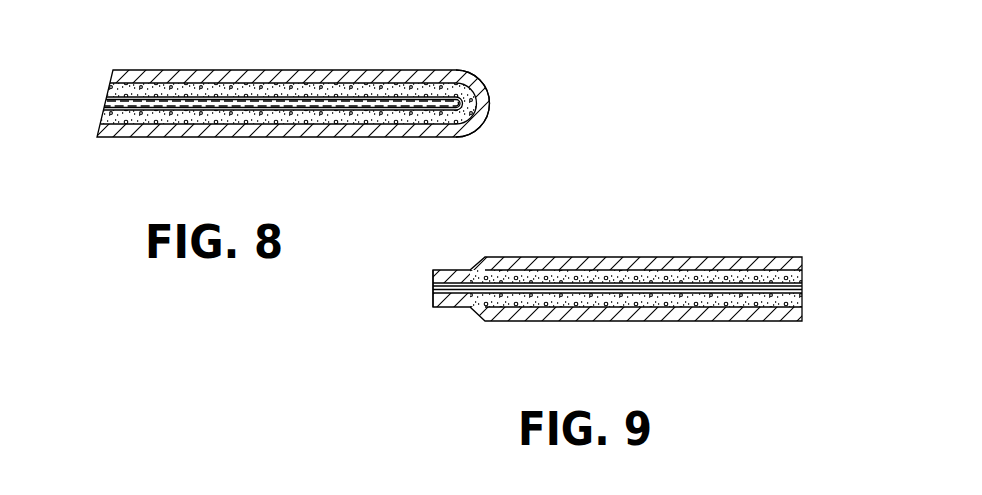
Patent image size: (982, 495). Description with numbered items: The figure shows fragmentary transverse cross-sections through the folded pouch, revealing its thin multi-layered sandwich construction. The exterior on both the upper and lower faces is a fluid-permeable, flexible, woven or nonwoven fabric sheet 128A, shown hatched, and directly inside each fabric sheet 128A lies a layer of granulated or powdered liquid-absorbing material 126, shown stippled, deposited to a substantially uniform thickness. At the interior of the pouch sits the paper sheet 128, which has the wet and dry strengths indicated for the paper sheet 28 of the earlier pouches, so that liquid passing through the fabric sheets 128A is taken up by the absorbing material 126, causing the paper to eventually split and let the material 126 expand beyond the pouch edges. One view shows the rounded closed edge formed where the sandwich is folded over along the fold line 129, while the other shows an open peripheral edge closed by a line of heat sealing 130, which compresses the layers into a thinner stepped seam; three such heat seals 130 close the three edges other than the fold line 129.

In FIG. 8, the liquid-absorbing material 126 is at (108, 96).
In FIG. 9, the liquid-absorbing material 126 is at (798, 278).
In FIG. 8, the paper sheet 128 is at (117, 112).
In FIG. 9, the paper sheet 128 is at (800, 291).
In FIG. 8, the fabric sheet 128A is at (147, 77).
In FIG. 9, the fabric sheet 128A is at (585, 263).
In FIG. 8, the paper sheet 28 is at (238, 103).
In FIG. 8, the fold line 129 is at (485, 80).
In FIG. 9, the line of heat sealing 130 is at (473, 272).